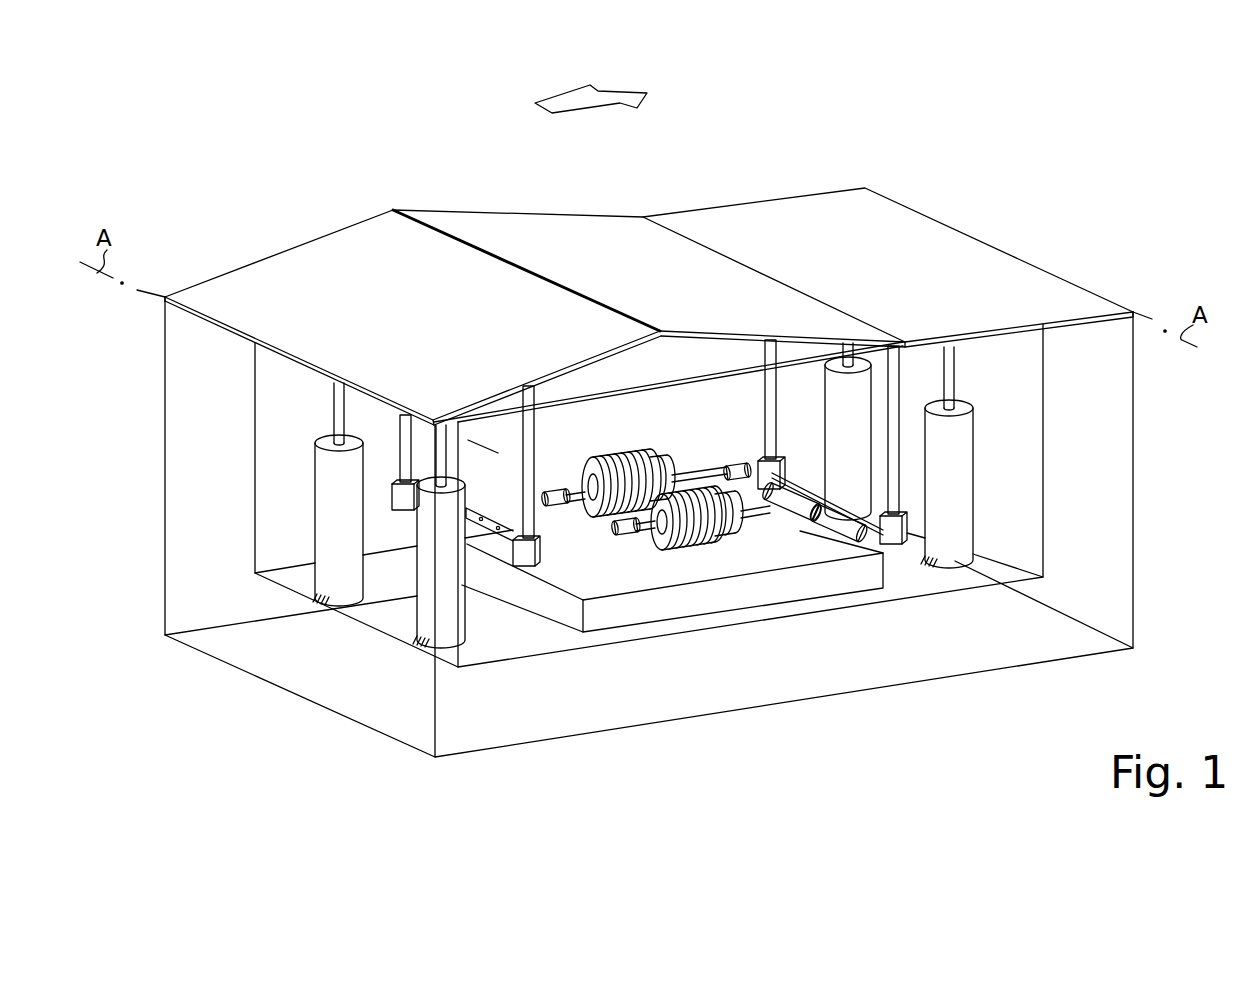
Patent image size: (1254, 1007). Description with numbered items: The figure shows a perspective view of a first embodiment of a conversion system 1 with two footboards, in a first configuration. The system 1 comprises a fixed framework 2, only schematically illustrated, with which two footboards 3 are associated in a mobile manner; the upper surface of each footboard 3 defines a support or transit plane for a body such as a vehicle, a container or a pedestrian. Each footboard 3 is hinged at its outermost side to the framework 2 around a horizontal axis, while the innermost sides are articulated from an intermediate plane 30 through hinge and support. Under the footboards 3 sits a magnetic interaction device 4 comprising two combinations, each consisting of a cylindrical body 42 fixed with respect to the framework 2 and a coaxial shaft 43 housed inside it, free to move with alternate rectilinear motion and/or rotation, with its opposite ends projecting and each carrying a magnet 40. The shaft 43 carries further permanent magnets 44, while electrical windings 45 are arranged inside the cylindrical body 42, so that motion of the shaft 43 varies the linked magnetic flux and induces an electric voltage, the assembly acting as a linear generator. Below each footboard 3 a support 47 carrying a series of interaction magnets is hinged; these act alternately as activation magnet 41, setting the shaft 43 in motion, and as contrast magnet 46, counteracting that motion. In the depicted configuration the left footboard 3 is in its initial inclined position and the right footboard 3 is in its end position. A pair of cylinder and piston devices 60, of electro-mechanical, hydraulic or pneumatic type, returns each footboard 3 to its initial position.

The conversion system 1 is at (1066, 160).
The fixed framework 2 is at (1049, 553).
The footboard 3 is at (277, 243).
The intermediate plane 30 is at (510, 197).
The magnetic interaction device 4 is at (721, 572).
The magnet 40 is at (555, 489).
The activation magnet 41 is at (832, 519).
The cylindrical body 42 is at (605, 458).
The shaft 43 is at (700, 464).
The permanent magnets 44 is at (652, 461).
The electrical windings 45 is at (594, 521).
The contrast magnet 46 is at (493, 551).
The support 47 is at (395, 431).
The cylinder and piston device 60 is at (352, 528).